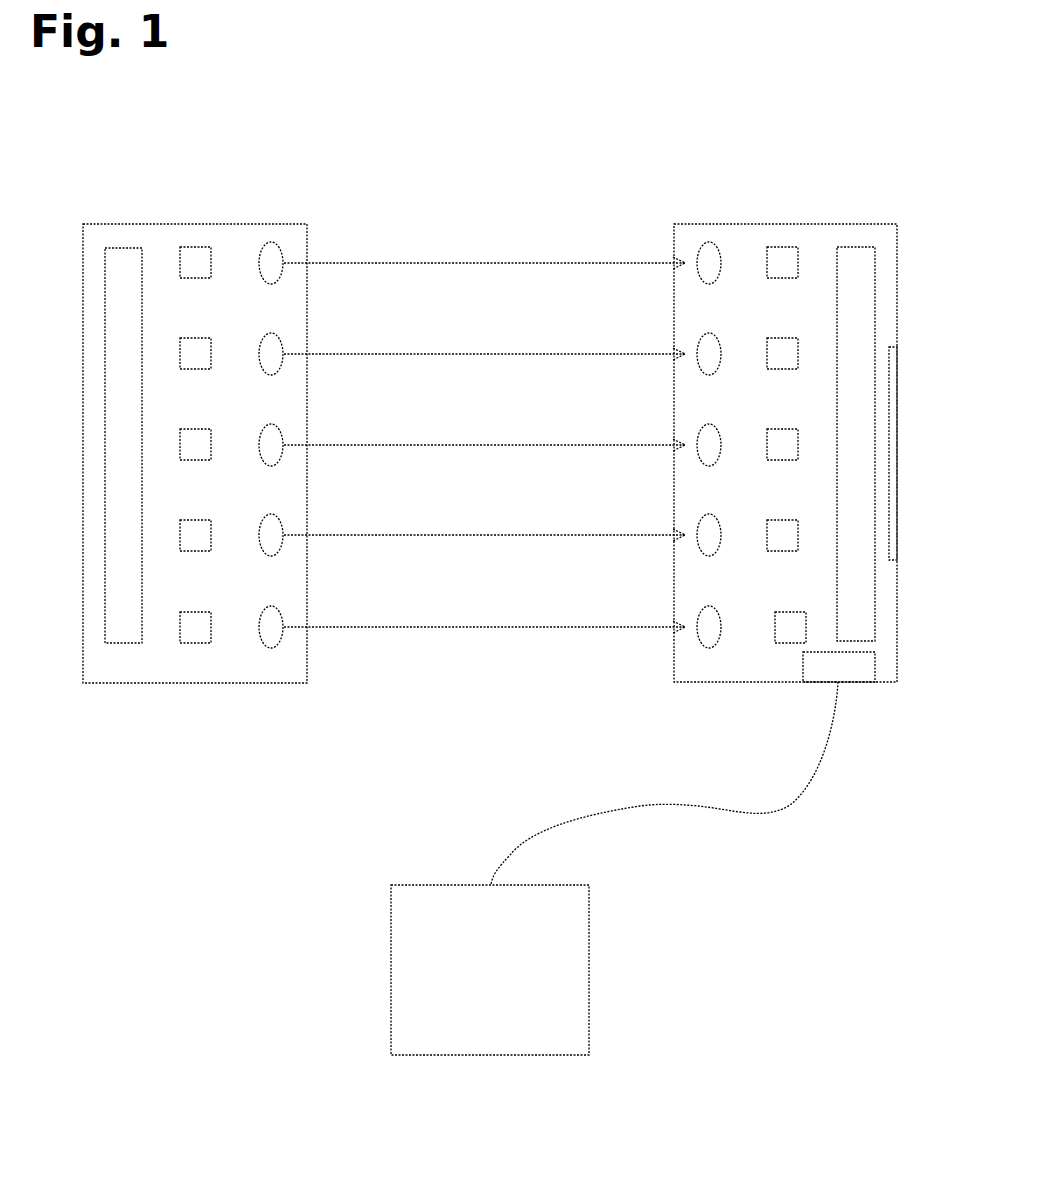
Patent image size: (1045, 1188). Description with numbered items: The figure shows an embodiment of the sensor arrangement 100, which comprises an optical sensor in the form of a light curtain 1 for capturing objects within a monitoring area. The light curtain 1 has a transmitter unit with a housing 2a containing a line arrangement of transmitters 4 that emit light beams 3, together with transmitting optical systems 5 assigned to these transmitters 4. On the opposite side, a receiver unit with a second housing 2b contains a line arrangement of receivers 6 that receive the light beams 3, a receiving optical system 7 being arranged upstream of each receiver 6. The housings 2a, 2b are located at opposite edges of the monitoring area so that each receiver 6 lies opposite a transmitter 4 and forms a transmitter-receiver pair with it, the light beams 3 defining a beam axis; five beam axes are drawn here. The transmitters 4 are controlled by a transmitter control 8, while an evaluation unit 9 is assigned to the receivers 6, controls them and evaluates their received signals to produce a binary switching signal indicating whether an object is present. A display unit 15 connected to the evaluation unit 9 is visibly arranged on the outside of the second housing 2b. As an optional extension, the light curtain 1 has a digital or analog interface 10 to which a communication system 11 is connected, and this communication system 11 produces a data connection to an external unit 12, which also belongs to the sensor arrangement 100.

The sensor arrangement 100 is at (330, 123).
The light curtain 1 is at (626, 200).
The housing 2a is at (193, 224).
The second housing 2b is at (785, 224).
The light beams 3 is at (490, 263).
The transmitters 4 is at (195, 445).
The transmitting optical systems 5 is at (271, 445).
The receivers 6 is at (786, 445).
The receiving optical system 7 is at (709, 445).
The transmitter control 8 is at (123, 445).
The evaluation unit 9 is at (856, 444).
The interface 10 is at (839, 667).
The communication system 11 is at (620, 806).
The external unit 12 is at (490, 970).
The display unit 15 is at (895, 450).